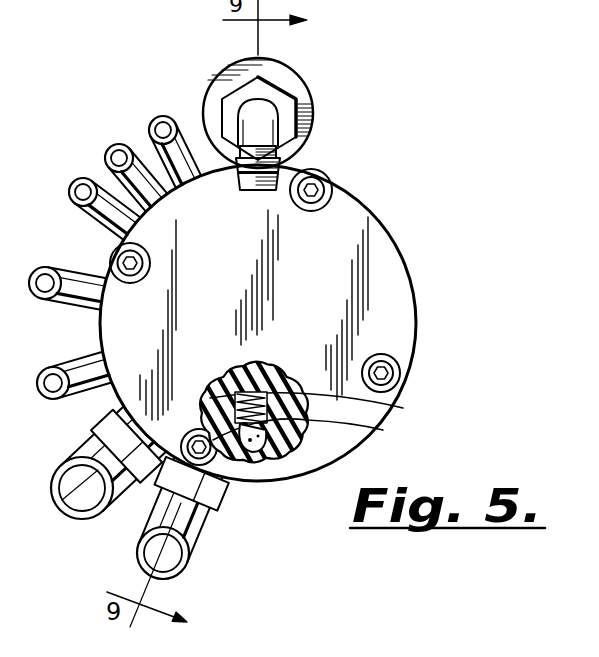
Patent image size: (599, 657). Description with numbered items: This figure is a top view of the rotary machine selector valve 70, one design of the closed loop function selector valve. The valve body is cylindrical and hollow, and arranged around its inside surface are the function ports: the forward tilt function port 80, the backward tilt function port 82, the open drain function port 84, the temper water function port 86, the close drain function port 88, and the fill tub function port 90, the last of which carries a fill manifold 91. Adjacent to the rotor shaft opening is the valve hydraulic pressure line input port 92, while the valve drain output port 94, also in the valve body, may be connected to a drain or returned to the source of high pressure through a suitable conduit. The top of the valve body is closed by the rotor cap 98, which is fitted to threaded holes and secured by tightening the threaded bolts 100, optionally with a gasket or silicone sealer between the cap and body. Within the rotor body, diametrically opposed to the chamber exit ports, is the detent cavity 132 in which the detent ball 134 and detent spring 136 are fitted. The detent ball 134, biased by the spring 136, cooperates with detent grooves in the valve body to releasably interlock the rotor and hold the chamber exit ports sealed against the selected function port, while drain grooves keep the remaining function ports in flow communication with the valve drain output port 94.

The rotary machine selector valve 70 is at (406, 213).
The forward tilt function port 80 is at (99, 368).
The backward tilt function port 82 is at (98, 290).
The open drain function port 84 is at (118, 230).
The temper water function port 86 is at (147, 200).
The close drain function port 88 is at (187, 172).
The fill tub function port 90 is at (290, 163).
The fill manifold 91 is at (279, 82).
The valve hydraulic pressure line input port 92 is at (207, 513).
The valve drain output port 94 is at (123, 443).
The rotor cap 98 is at (382, 270).
The threaded bolts 100 is at (321, 180).
The detent cavity 132 is at (383, 430).
The detent ball 134 is at (265, 455).
The detent spring 136 is at (403, 408).